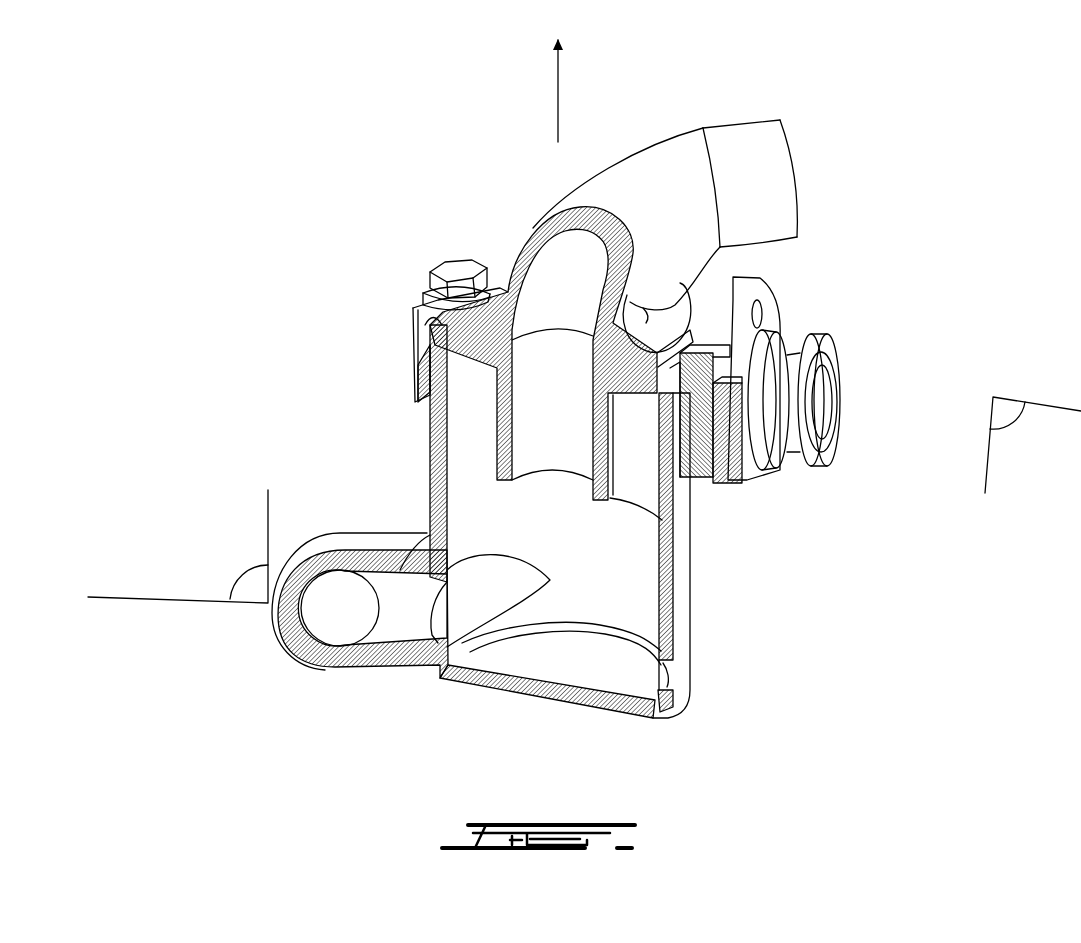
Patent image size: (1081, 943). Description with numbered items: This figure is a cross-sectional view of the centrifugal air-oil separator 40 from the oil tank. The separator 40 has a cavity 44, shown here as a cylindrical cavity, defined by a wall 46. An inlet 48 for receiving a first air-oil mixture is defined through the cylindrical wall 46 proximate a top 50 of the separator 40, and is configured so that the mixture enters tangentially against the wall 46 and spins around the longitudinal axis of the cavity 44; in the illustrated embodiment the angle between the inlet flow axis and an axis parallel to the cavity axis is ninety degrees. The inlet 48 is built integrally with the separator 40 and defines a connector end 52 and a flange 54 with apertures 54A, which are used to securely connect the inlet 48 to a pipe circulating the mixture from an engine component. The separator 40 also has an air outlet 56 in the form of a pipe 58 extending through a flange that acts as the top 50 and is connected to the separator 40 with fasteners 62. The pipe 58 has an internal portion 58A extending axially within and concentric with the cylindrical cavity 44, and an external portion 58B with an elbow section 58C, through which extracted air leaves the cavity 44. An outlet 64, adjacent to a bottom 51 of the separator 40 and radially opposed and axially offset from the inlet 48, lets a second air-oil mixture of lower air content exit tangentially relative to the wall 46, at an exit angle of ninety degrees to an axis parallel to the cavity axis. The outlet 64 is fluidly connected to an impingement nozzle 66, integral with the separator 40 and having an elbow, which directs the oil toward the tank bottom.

The centrifugal air-oil separator 40 is at (232, 155).
The cavity 44 is at (563, 651).
The wall 46 is at (630, 602).
The inlet 48 is at (902, 366).
The top 50 is at (378, 300).
The bottom 51 is at (494, 688).
The connector end 52 is at (805, 462).
The flange 54 is at (768, 288).
The apertures 54A is at (759, 318).
The air outlet 56 is at (813, 113).
The pipe 58 is at (533, 223).
The internal portion 58A is at (613, 497).
The external portion 58B is at (802, 178).
The elbow section 58C is at (624, 130).
The fasteners 62 is at (456, 265).
The outlet 64 is at (433, 685).
The impingement nozzle 66 is at (265, 628).